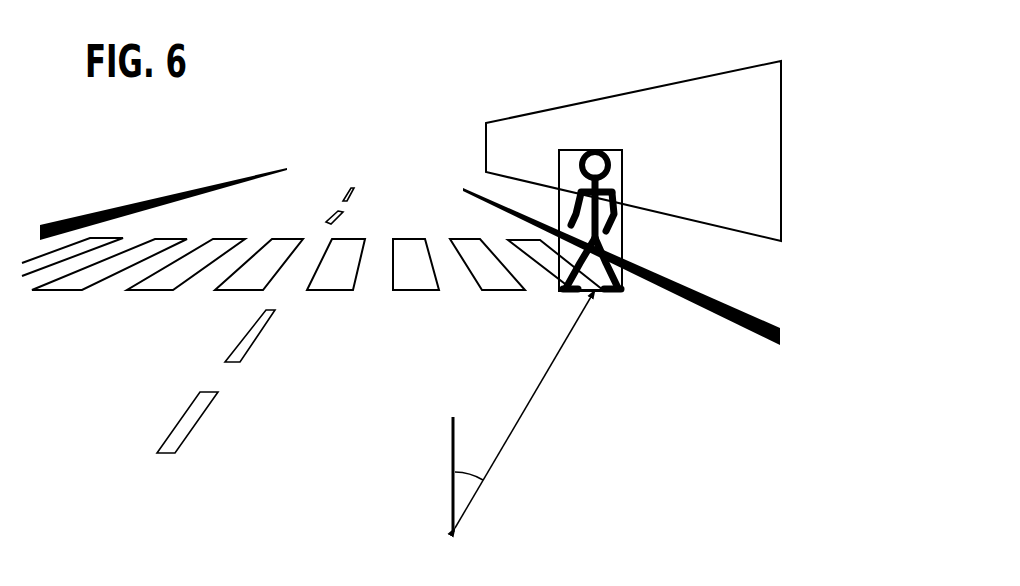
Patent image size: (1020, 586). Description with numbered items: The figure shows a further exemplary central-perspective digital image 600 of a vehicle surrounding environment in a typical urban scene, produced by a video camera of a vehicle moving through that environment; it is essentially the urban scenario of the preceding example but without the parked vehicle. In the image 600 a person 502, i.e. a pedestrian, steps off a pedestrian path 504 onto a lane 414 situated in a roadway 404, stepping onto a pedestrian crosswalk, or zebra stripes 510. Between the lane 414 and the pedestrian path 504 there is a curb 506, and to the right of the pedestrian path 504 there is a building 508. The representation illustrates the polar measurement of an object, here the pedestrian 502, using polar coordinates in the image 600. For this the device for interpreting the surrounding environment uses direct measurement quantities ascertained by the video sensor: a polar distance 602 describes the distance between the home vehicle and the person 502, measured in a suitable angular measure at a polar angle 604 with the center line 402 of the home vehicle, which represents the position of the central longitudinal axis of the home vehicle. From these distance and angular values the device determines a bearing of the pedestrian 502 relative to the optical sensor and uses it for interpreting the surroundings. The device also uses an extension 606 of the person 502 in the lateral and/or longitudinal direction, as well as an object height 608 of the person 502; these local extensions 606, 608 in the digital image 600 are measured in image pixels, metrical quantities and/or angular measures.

The central-perspective digital image 600 is at (316, 154).
The pedestrian crosswalk 510 is at (148, 291).
The roadway 404 is at (188, 501).
The lane 414 is at (87, 415).
The building 508 is at (677, 82).
The curb 506 is at (472, 187).
The pedestrian path 504 is at (783, 293).
The person 502 is at (595, 150).
The object height 608 is at (623, 228).
The extension 606 is at (616, 293).
The polar distance 602 is at (502, 447).
The center line 402 is at (450, 490).
The angle arc 604 is at (471, 468).